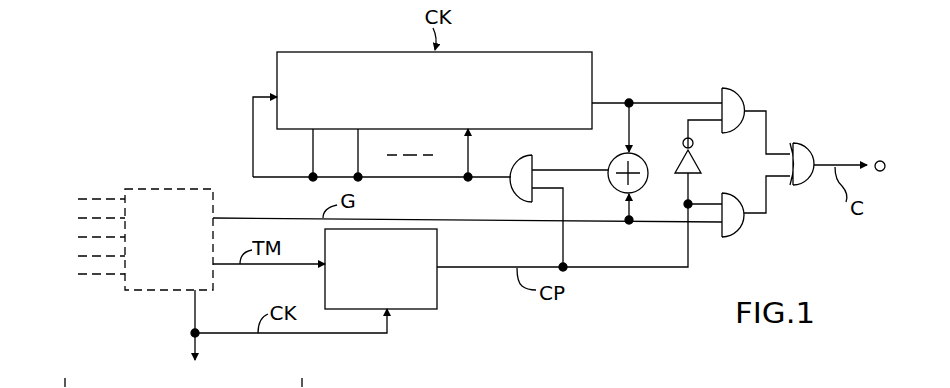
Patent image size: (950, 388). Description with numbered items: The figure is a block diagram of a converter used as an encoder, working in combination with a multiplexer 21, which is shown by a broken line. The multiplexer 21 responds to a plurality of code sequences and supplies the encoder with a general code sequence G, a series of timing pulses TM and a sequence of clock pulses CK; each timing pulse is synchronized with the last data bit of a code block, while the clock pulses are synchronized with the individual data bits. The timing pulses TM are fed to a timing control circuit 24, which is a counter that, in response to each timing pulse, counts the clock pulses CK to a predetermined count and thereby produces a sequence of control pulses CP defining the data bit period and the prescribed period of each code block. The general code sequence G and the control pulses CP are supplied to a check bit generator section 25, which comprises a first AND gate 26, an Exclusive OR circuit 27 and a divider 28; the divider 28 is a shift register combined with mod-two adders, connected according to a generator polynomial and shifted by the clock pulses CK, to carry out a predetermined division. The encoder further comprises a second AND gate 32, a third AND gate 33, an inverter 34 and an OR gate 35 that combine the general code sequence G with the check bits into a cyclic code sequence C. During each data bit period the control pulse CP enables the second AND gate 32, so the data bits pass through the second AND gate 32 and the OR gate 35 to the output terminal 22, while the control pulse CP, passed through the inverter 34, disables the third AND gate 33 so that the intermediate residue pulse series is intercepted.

The multiplexer 21 is at (160, 186).
The output terminal 22 is at (883, 160).
The timing control circuit 24 is at (437, 305).
The check bit generator section 25 is at (558, 42).
The first AND gate 26 is at (533, 160).
The Exclusive OR circuit 27 is at (642, 153).
The divider 28 is at (339, 50).
The second AND gate 32 is at (735, 234).
The third AND gate 33 is at (731, 88).
The inverter 34 is at (700, 164).
The OR gate 35 is at (798, 144).